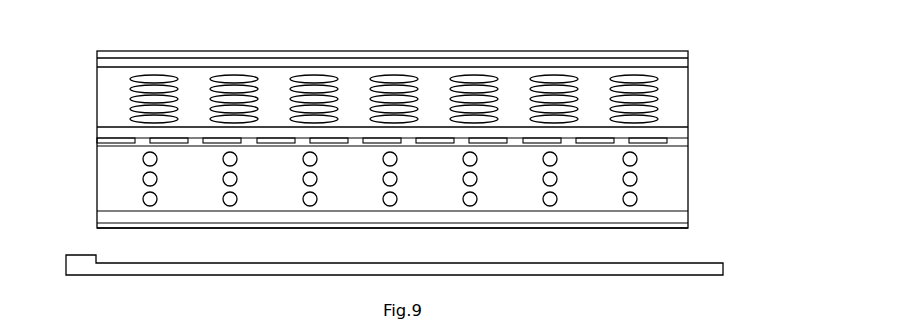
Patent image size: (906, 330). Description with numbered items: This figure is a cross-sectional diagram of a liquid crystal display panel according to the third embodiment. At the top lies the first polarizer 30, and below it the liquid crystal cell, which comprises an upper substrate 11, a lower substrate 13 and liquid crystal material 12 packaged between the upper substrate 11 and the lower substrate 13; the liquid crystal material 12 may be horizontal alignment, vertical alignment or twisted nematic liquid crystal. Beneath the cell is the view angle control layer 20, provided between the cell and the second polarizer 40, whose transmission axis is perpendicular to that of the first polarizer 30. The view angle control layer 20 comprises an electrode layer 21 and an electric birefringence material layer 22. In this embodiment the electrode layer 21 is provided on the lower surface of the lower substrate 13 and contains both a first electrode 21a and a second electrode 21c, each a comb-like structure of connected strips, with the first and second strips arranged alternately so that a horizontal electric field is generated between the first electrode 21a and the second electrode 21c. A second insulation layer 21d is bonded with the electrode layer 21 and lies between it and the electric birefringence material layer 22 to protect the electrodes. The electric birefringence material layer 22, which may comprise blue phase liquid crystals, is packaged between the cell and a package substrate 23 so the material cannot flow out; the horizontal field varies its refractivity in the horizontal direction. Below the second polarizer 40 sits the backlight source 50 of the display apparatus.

The upper substrate 11 is at (97, 63).
The liquid crystal material 12 is at (98, 98).
The lower substrate 13 is at (98, 133).
The view angle control layer 20 is at (461, 176).
The electrode layer 21 is at (442, 149).
The first electrode 21a is at (663, 147).
The second electrode 21c is at (613, 138).
The second insulation layer 21d is at (657, 142).
The electric birefringence material layer 22 is at (677, 185).
The package substrate 23 is at (443, 231).
The first polarizer 30 is at (595, 53).
The second polarizer 40 is at (670, 228).
The backlight source 50 is at (267, 270).